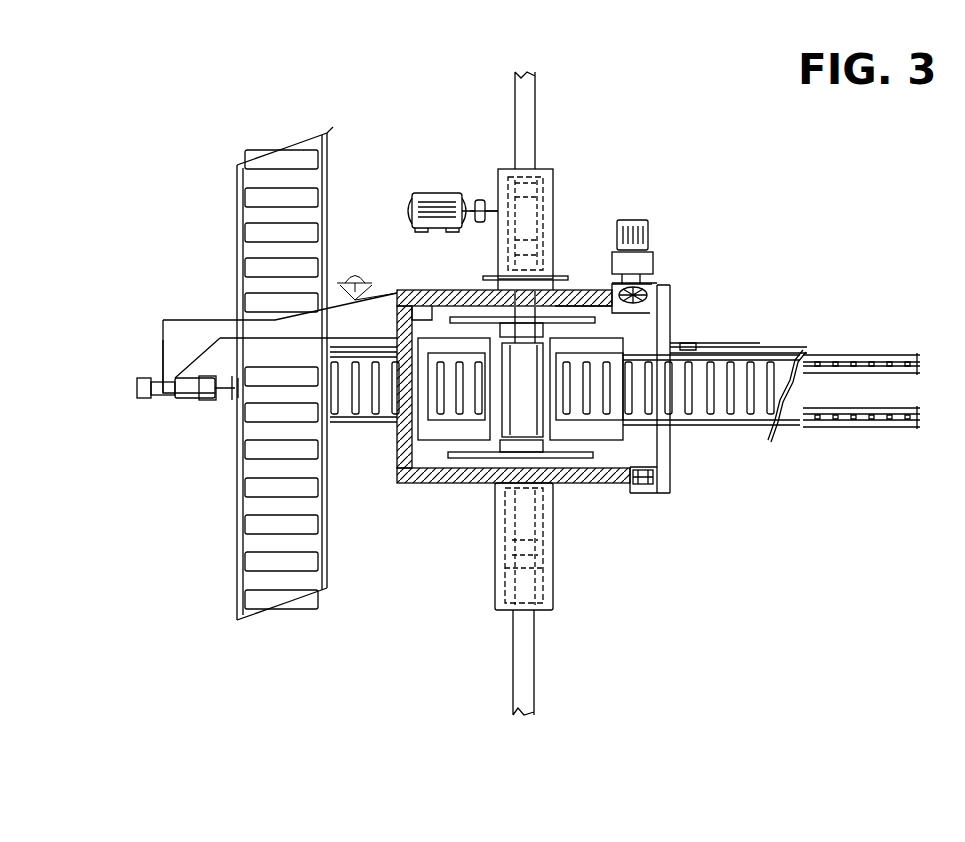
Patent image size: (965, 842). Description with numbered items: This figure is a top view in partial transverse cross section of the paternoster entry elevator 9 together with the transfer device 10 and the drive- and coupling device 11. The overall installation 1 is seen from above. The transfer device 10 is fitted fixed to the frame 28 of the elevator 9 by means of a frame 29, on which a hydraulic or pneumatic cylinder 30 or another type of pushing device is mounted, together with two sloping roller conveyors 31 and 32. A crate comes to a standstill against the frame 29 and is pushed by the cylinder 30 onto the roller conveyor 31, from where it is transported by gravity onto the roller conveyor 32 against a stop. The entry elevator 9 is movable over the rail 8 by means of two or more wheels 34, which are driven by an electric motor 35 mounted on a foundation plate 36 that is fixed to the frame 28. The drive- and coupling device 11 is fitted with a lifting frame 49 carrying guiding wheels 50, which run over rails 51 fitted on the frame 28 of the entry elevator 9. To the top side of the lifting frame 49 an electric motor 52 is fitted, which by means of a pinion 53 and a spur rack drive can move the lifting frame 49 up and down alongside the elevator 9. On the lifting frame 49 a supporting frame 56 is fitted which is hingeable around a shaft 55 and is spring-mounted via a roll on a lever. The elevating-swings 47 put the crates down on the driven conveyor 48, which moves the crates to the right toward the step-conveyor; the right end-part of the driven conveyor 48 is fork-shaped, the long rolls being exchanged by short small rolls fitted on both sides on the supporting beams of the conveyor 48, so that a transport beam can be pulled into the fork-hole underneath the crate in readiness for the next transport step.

The conveyor drum 1 is at (243, 210).
The rail 8 is at (522, 97).
The entry elevator 9 is at (446, 490).
The transfer device 10 is at (158, 332).
The drive- and coupling device 11 is at (722, 347).
The frame 28 is at (408, 480).
The frame 29 is at (197, 330).
The cylinder 30 is at (135, 391).
The roller conveyor 31 is at (357, 408).
The roller conveyor 32 is at (440, 360).
The wheels 34 is at (540, 595).
The electric motor 35 is at (412, 200).
The foundation plate 36 is at (468, 195).
The elevating-swings 47 is at (604, 432).
The driven conveyor 48 is at (750, 355).
The lifting frame 49 is at (666, 293).
The guiding wheels 50 is at (636, 287).
The rails 51 is at (663, 295).
The electric motor 52 is at (632, 220).
The pinion 53 is at (578, 290).
The shaft 55 is at (686, 349).
The supporting frame 56 is at (780, 348).